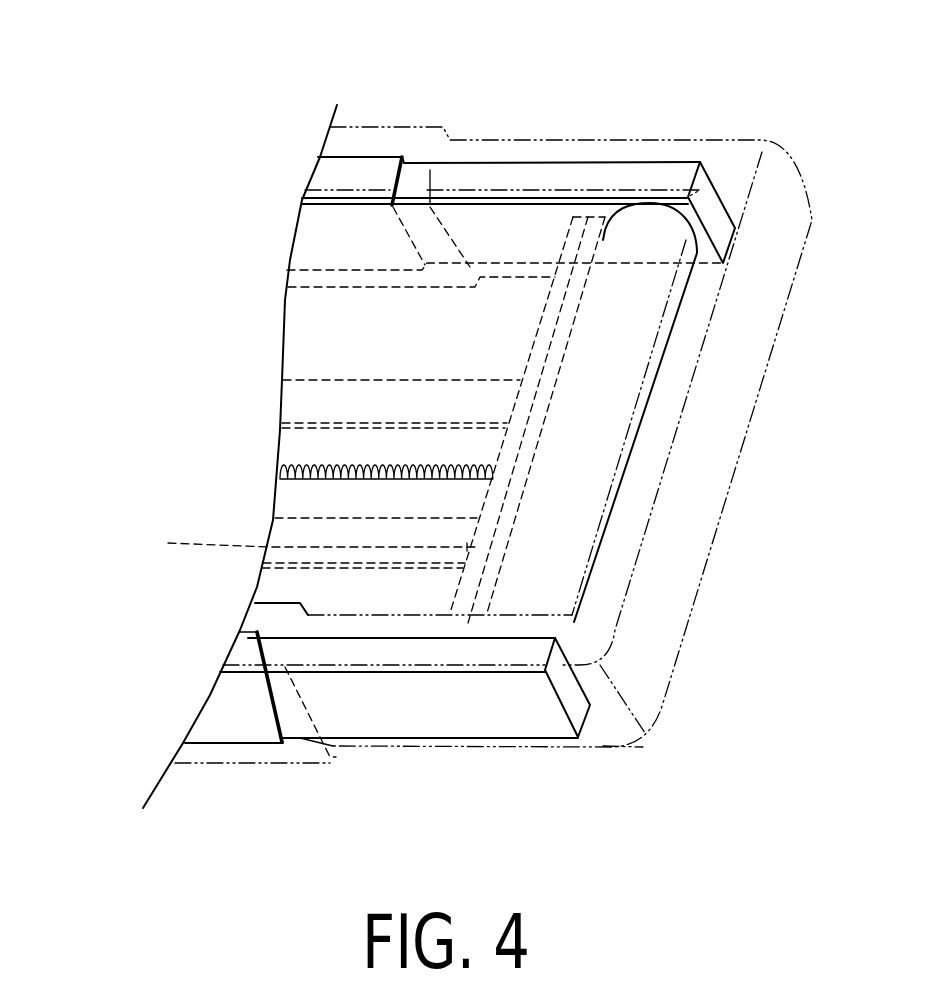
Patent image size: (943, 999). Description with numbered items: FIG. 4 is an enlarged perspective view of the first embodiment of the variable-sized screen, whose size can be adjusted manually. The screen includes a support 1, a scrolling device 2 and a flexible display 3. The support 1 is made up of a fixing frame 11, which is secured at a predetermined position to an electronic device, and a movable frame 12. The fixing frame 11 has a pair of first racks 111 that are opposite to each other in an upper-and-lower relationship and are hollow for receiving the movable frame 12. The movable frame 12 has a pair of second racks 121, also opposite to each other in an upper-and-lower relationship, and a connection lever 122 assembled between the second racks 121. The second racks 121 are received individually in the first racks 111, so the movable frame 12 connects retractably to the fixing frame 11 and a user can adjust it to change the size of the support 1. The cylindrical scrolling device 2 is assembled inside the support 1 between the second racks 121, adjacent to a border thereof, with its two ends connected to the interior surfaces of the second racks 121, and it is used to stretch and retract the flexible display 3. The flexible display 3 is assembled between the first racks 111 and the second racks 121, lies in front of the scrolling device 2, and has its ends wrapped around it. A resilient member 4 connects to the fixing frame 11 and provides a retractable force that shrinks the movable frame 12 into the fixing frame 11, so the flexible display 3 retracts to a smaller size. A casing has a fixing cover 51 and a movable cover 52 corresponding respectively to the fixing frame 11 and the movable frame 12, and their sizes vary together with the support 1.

The support 1 is at (303, 148).
The scrolling device 2 is at (648, 417).
The flexible display 3 is at (273, 362).
The resilient member 4 is at (302, 462).
The fixing frame 11 is at (392, 150).
The movable frame 12 is at (675, 160).
The fixing cover 51 is at (203, 763).
The movable cover 52 is at (617, 747).
The first rack 111 is at (358, 173).
The second rack 121 is at (693, 163).
The connection lever 122 is at (296, 540).